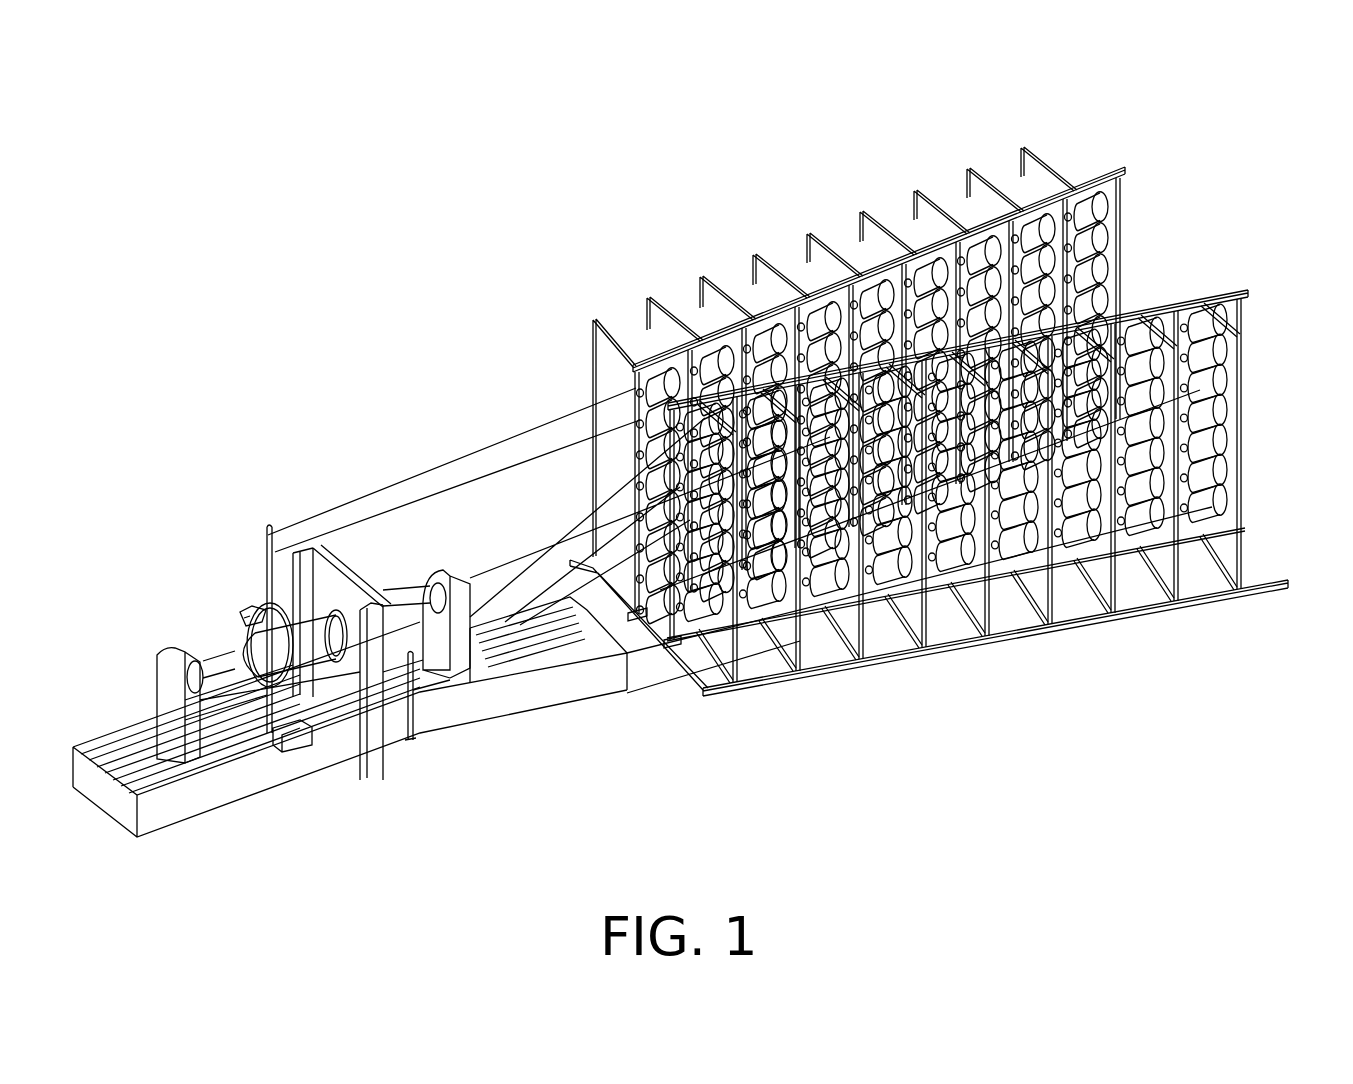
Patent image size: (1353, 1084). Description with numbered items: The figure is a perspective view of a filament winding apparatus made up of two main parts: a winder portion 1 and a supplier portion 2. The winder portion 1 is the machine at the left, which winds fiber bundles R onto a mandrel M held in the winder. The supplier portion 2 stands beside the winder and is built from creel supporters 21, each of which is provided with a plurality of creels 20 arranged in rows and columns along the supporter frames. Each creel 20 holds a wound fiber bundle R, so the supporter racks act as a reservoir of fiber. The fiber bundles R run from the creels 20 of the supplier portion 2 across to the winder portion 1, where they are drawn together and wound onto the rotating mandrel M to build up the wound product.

The winder portion 1 is at (350, 684).
The supplier portion 2 is at (946, 376).
The creel 20 is at (1097, 237).
The creel supporter 21 is at (935, 190).
The fiber bundle R is at (437, 465).
The mandrel M is at (318, 655).